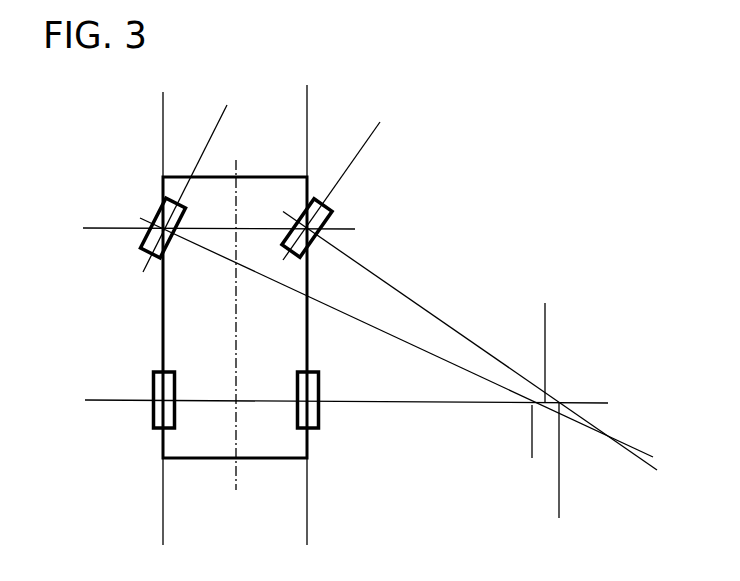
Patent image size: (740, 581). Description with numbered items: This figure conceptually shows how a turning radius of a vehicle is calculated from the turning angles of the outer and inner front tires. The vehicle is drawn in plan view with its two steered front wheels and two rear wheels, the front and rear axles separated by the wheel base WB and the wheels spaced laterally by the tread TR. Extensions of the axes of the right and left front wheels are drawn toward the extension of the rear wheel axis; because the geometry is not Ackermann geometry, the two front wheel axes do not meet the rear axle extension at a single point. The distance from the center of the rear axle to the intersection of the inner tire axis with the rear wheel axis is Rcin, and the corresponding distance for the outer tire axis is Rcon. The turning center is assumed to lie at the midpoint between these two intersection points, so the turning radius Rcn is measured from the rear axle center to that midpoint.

The wheel base WB is at (110, 399).
The track width TR is at (306, 525).
The turning radius Rcn is at (237, 329).
The distance to outer tire axis intersection Rcon is at (237, 442).
The distance to inner tire axis intersection Rcin is at (237, 487).